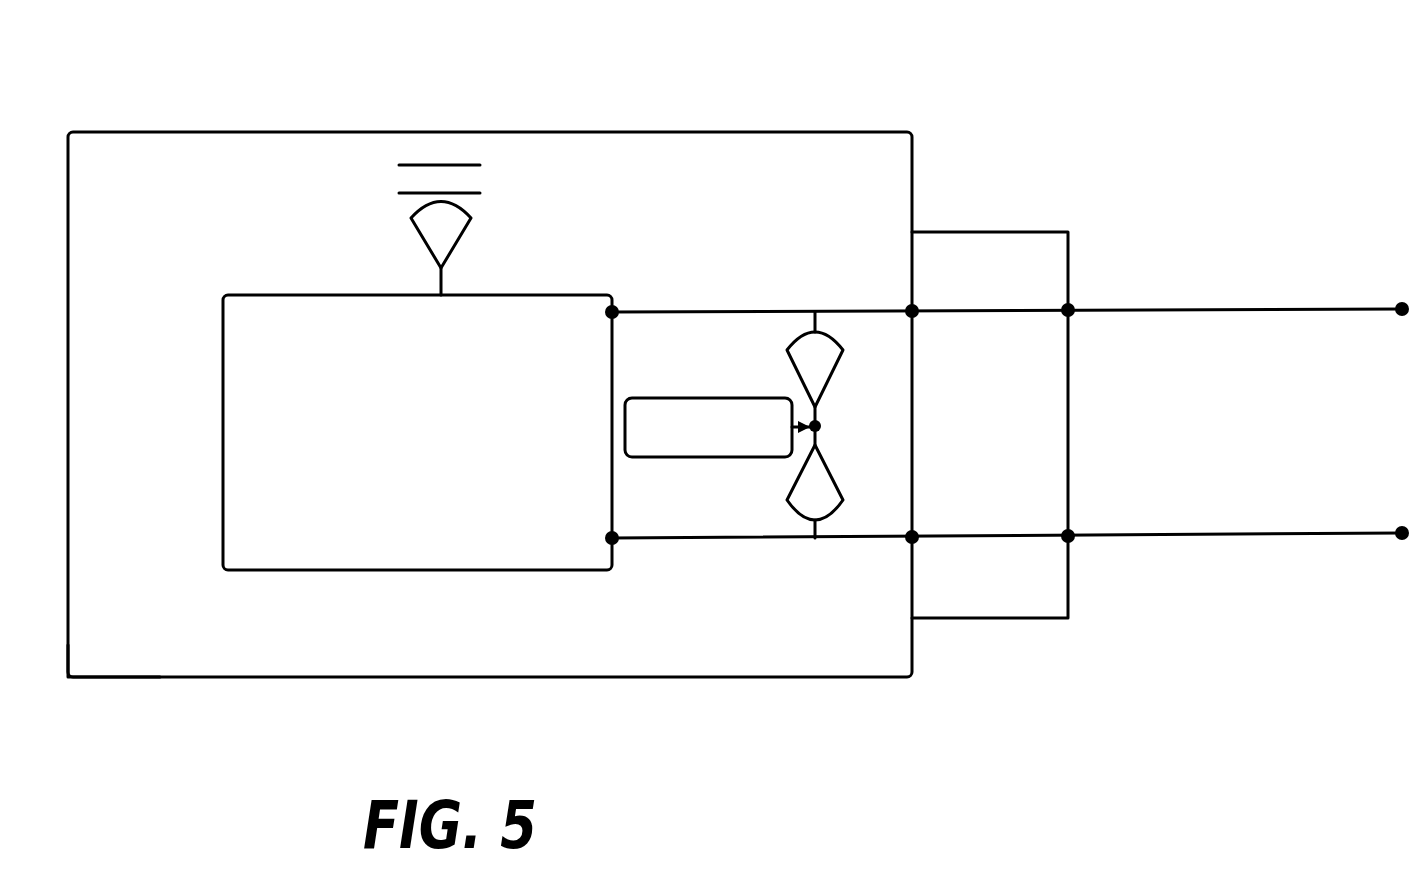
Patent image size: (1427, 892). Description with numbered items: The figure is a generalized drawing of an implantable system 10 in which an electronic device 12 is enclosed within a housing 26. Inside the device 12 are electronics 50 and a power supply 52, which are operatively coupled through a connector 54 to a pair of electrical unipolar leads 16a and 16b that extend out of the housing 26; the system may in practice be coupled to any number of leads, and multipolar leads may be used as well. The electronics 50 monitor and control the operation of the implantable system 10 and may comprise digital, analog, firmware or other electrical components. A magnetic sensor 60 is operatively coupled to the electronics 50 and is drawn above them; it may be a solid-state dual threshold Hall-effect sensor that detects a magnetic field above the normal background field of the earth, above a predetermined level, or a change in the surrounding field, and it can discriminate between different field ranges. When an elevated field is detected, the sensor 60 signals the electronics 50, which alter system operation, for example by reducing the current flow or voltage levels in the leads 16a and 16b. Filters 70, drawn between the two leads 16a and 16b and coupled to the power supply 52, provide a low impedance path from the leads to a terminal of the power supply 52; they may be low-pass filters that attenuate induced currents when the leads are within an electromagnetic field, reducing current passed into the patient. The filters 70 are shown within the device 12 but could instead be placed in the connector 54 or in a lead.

The implantable system 10 is at (252, 115).
The electronic device 12 is at (197, 653).
The electrical unipolar lead 16a is at (1188, 308).
The electrical unipolar lead 16b is at (1188, 535).
The housing 26 is at (748, 690).
The electronics 50 is at (357, 543).
The power supply 52 is at (677, 437).
The connector 54 is at (967, 635).
The magnetic sensor 60 is at (505, 207).
The filters 70 is at (797, 366).